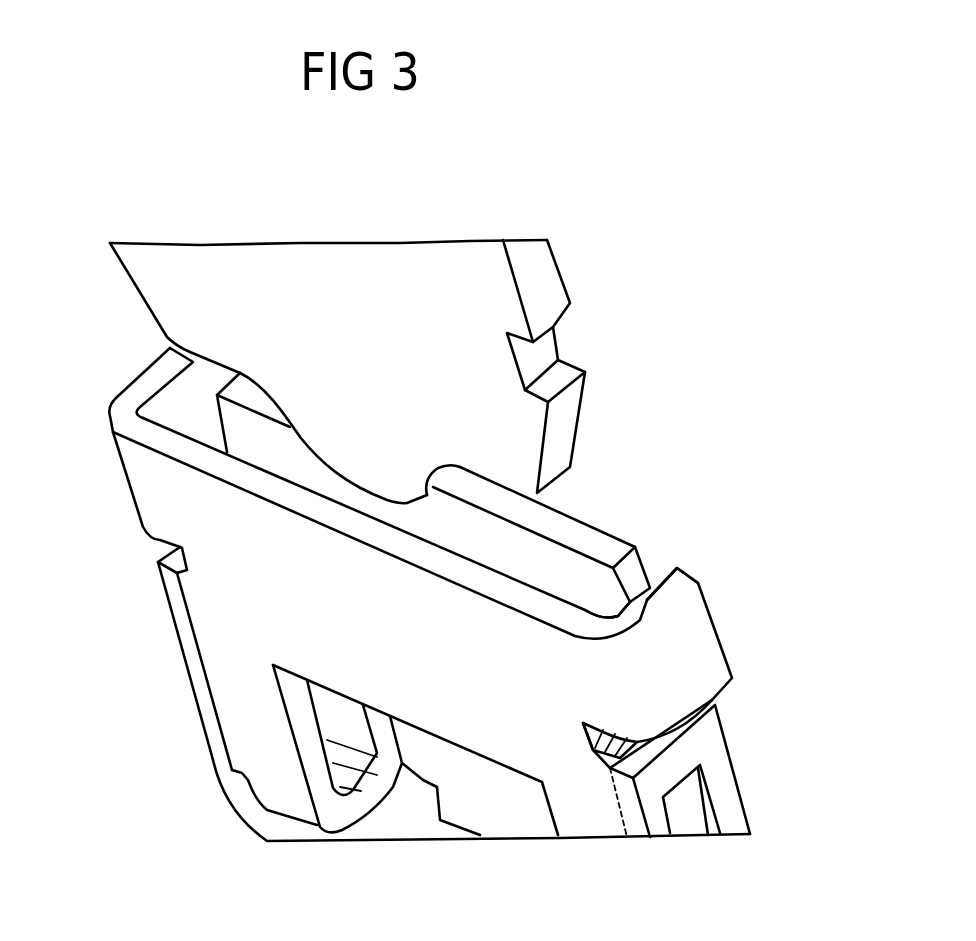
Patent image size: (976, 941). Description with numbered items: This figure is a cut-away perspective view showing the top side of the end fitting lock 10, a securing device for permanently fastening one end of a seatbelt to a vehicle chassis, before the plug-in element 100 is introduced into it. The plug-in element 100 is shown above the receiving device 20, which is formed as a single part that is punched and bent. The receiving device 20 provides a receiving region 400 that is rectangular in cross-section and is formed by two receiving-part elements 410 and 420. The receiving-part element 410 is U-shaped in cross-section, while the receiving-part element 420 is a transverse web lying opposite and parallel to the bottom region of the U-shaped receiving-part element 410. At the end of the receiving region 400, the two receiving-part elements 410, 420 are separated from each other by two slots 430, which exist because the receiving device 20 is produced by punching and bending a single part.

The end fitting lock 10 is at (170, 607).
The receiving device 20 is at (737, 780).
The plug-in element 100 is at (548, 295).
The receiving region 400 is at (590, 598).
The receiving-part element 410 is at (133, 425).
The receiving-part element 420 is at (558, 522).
The slots 430 is at (207, 382).